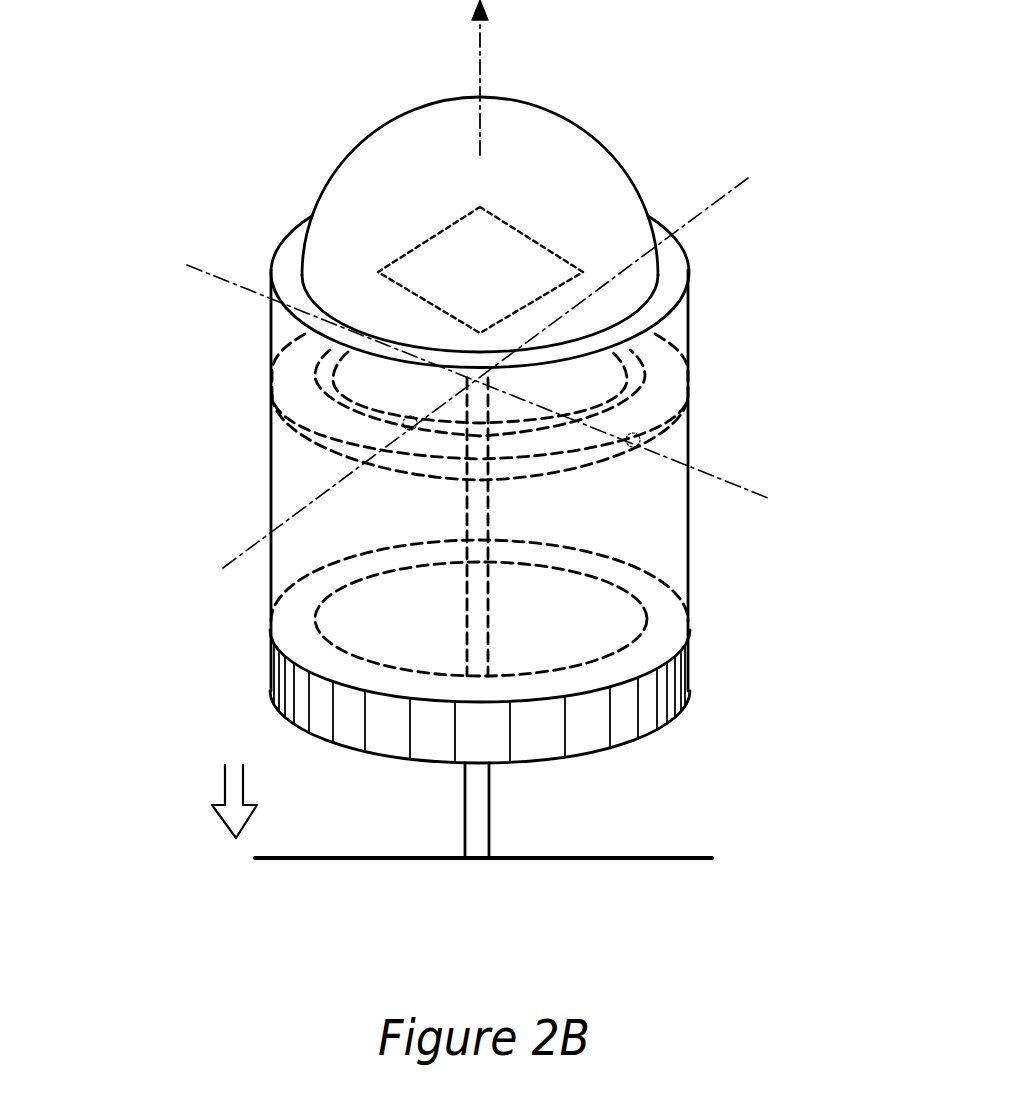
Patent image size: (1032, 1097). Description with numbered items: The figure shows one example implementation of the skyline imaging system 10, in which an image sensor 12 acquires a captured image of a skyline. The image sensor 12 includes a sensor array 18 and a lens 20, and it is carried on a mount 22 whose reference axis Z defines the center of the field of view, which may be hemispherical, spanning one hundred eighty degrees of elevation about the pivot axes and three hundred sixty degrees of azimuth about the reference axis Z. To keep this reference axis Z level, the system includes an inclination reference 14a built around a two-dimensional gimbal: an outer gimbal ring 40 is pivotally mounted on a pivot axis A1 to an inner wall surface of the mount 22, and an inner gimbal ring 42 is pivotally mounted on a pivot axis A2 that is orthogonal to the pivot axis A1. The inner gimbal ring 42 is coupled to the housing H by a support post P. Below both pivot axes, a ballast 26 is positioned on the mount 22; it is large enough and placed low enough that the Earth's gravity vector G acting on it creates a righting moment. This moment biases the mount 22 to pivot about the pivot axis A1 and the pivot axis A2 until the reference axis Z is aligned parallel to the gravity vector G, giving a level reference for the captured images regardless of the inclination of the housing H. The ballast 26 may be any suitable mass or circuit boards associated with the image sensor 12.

The skyline imaging system 10 is at (759, 83).
The image sensor 12 is at (360, 140).
The inclination reference 14a is at (130, 262).
The sensor array 18 is at (528, 237).
The lens 20 is at (433, 147).
The mount 22 is at (272, 445).
The ballast 26 is at (672, 618).
The outer gimbal ring 40 is at (686, 410).
The inner gimbal ring 42 is at (620, 369).
The reference axis Z is at (482, 25).
The pivot axis A1 is at (745, 492).
The pivot axis A2 is at (233, 561).
The Earth's gravity vector G is at (227, 778).
The support post P is at (490, 830).
The housing H is at (613, 860).